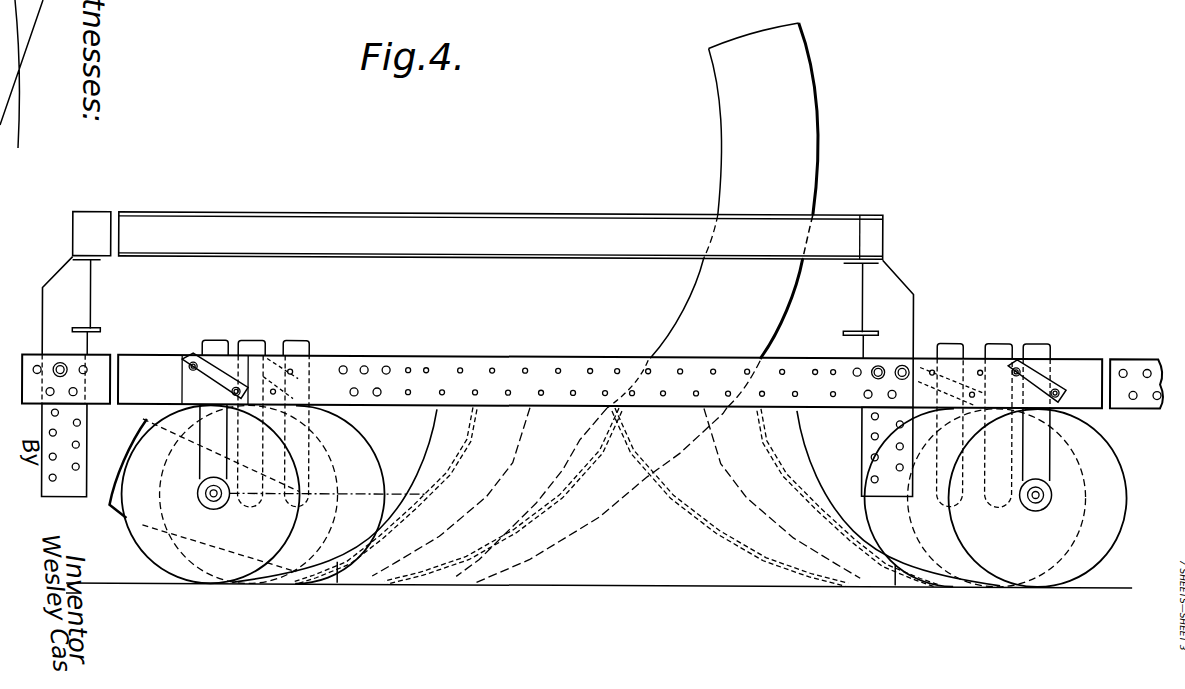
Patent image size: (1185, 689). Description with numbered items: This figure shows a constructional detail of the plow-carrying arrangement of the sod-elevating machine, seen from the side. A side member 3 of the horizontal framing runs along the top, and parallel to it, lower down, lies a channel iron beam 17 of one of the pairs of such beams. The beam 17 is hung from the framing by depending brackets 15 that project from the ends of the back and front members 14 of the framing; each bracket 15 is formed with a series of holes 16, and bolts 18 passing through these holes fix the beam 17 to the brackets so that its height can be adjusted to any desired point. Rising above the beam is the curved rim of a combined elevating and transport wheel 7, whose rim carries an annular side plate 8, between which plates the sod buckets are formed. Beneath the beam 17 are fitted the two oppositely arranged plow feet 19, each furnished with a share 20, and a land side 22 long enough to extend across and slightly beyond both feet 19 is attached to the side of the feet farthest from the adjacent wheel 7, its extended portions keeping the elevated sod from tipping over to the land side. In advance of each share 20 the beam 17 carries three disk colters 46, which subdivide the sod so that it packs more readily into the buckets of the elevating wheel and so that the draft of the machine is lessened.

The side member 3 is at (530, 227).
The combined elevating and transport wheel 7 is at (818, 137).
The annular side plate 8 is at (627, 299).
The back and front member 14 is at (92, 277).
The depending bracket 15 is at (926, 307).
The hole 16 is at (76, 472).
The channel iron beam 17 is at (383, 356).
The bolt 18 is at (85, 354).
The plow foot 19 is at (400, 557).
The share 20 is at (312, 576).
The land side 22 is at (599, 561).
The disk colter 46 is at (1035, 530).